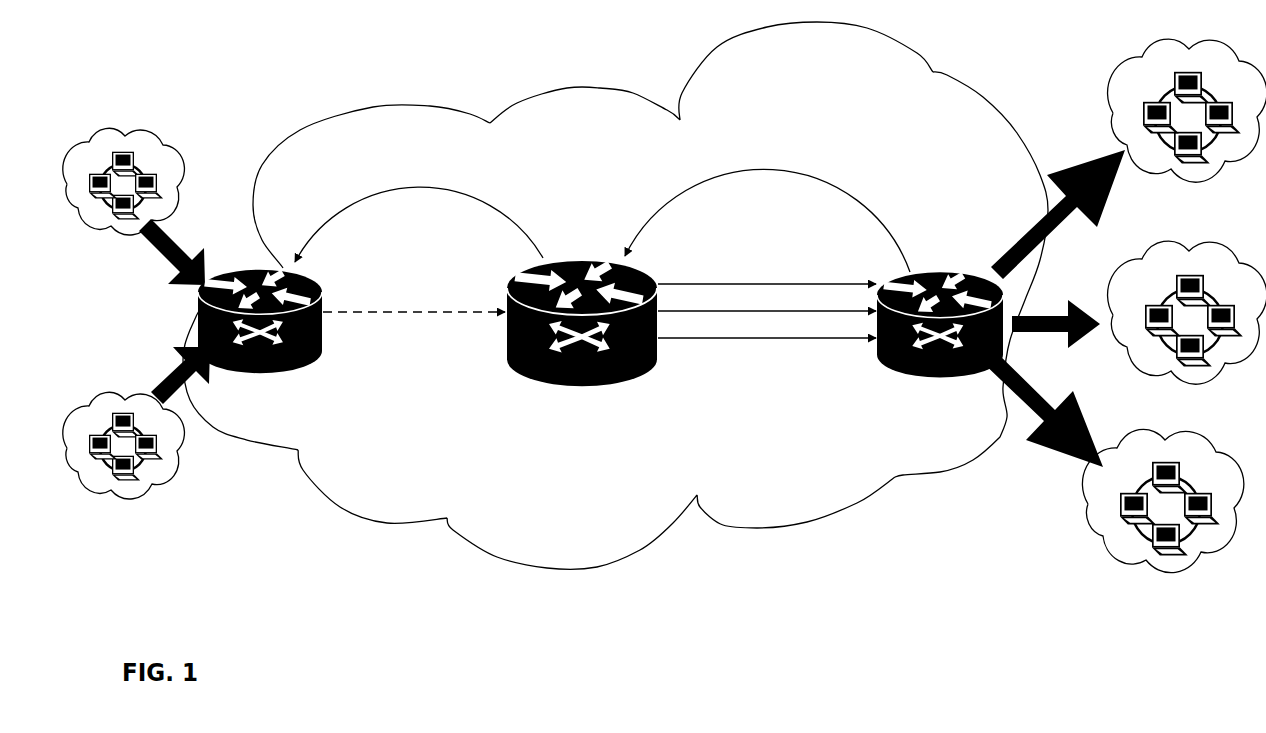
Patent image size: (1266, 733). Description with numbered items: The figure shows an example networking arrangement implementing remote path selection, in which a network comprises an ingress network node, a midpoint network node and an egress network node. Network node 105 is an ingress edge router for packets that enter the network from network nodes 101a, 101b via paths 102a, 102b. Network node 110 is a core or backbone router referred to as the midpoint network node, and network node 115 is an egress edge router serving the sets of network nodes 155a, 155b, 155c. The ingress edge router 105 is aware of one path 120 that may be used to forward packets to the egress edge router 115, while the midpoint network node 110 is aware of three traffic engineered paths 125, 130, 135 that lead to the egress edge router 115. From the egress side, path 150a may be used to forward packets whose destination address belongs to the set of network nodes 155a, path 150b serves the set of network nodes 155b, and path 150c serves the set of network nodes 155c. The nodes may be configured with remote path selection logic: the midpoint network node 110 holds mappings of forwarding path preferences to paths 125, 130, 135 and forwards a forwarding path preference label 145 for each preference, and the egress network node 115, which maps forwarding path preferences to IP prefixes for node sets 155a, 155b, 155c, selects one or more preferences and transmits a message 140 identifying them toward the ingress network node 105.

The network node 101a is at (94, 150).
The network node 101b is at (94, 414).
The path 102a is at (195, 245).
The path 102b is at (170, 348).
The ingress edge router 105 is at (262, 357).
The midpoint network node 110 is at (542, 362).
The egress edge router 115 is at (942, 357).
The path 120 is at (360, 306).
The path 125 is at (720, 281).
The path 130 is at (723, 311).
The path 135 is at (707, 343).
The message 140 is at (732, 167).
The forwarding path preference label 145 is at (400, 187).
The path 150a is at (1068, 160).
The path 150b is at (1068, 302).
The path 150c is at (1028, 453).
The set of network nodes 155a is at (1153, 68).
The set of network nodes 155b is at (1207, 256).
The set of network nodes 155c is at (1198, 440).